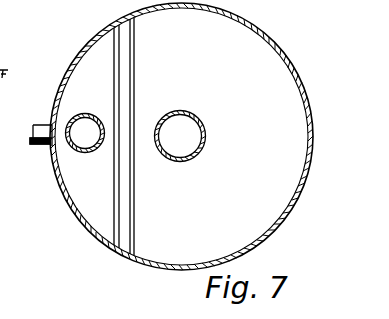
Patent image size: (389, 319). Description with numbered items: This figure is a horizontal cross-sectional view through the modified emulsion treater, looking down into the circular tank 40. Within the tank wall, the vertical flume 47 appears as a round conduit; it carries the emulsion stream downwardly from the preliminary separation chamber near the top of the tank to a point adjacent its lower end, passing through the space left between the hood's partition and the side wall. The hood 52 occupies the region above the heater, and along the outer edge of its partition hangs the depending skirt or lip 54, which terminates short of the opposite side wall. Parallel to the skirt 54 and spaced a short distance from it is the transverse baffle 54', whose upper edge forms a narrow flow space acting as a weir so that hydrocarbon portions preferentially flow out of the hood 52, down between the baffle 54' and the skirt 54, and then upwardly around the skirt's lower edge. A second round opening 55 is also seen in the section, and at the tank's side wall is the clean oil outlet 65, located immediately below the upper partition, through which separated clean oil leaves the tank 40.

The tank 40 is at (98, 236).
The hood 52 is at (268, 73).
The skirt or lip 54 is at (100, 136).
The transverse baffle 54' is at (154, 137).
The vertical flume 47 is at (88, 114).
The central opening 55 is at (205, 141).
The clean oil outlet 65 is at (45, 124).